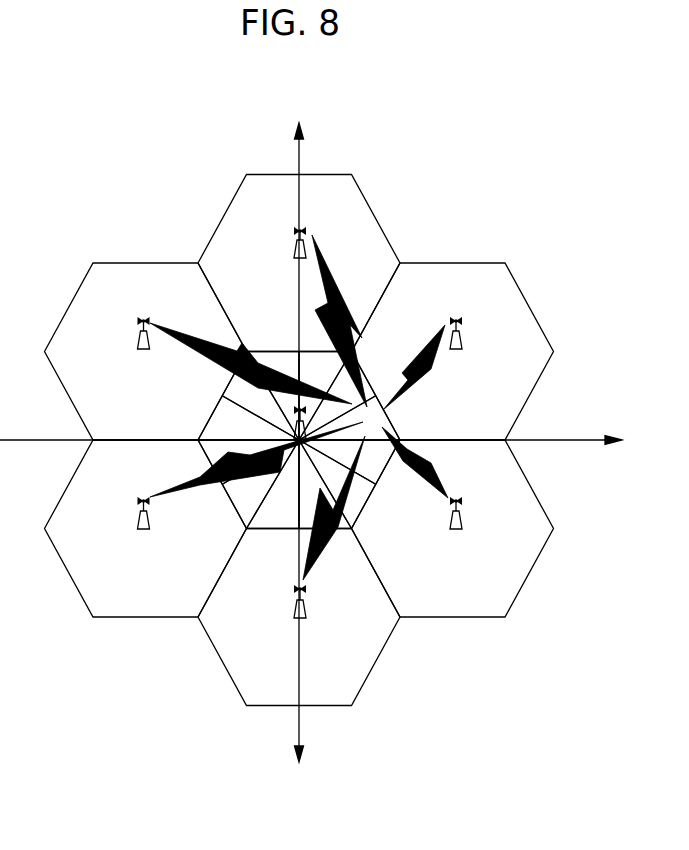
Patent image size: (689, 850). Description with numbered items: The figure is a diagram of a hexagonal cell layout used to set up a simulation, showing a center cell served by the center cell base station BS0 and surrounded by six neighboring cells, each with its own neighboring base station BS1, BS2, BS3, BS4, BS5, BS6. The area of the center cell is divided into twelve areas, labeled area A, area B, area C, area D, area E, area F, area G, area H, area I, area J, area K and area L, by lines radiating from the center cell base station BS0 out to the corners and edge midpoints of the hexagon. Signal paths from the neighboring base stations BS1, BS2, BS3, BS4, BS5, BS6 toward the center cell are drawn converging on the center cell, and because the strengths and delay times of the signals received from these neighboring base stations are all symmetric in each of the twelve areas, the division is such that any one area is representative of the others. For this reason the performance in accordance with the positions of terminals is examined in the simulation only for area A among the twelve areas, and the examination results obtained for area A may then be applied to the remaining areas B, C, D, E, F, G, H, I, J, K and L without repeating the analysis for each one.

The center cell base station BS0 is at (300, 438).
The neighboring base station BS1 is at (300, 259).
The neighboring base station BS2 is at (456, 349).
The neighboring base station BS3 is at (456, 527).
The neighboring base station BS4 is at (300, 617).
The neighboring base station BS5 is at (144, 527).
The neighboring base station BS6 is at (144, 349).
The area A is at (349, 418).
The area B is at (337, 396).
The area C is at (325, 396).
The area D is at (273, 396).
The area E is at (260, 396).
The area F is at (248, 418).
The area G is at (248, 462).
The area H is at (260, 484).
The area I is at (273, 484).
The area J is at (325, 484).
The area K is at (337, 484).
The area L is at (349, 462).